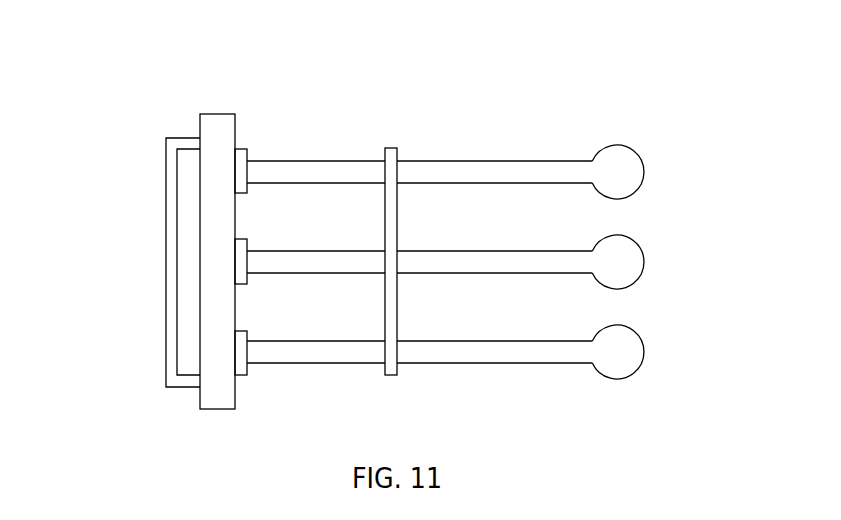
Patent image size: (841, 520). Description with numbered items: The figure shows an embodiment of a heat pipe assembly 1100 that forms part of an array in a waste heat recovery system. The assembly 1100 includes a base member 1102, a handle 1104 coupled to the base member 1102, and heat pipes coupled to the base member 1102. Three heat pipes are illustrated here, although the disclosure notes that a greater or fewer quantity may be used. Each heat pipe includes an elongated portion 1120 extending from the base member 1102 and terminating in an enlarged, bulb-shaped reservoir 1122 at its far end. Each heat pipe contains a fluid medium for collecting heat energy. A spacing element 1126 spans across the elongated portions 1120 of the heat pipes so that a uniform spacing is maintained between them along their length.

The heat pipe assembly 1100 is at (110, 70).
The base member 1102 is at (200, 393).
The handle 1104 is at (166, 342).
The elongated portion 1120 is at (338, 158).
The bulb-shaped reservoir 1122 is at (640, 159).
The spacing element 1126 is at (397, 148).